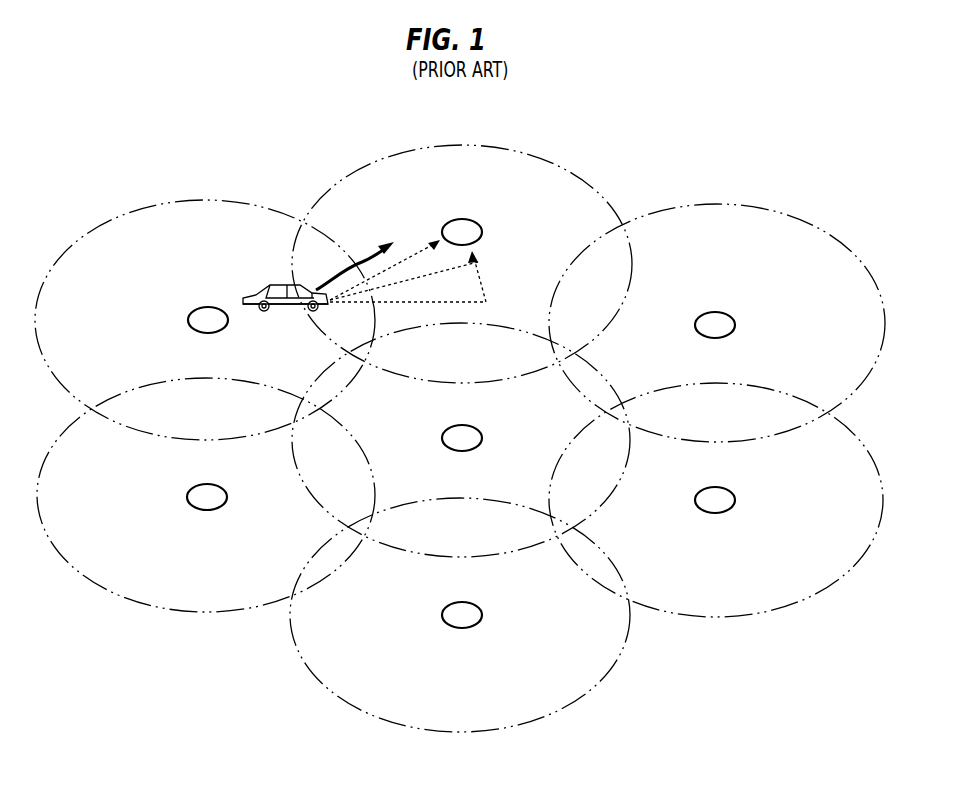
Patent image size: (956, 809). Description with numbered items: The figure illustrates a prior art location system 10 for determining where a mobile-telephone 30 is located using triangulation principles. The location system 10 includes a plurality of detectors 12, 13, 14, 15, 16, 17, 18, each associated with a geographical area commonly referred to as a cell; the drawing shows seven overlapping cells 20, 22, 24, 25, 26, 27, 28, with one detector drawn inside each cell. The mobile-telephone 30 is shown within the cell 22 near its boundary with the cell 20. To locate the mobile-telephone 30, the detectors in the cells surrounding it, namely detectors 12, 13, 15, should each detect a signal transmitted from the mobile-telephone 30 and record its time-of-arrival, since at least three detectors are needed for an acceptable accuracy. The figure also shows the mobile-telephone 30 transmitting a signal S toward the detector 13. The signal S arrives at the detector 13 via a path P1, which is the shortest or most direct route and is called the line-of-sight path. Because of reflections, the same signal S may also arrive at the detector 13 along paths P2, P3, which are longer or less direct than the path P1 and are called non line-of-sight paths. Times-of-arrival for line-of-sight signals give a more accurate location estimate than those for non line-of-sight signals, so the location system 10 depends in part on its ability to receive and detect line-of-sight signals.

The location system 10 is at (670, 116).
The detector 12 is at (188, 320).
The detector 13 is at (483, 235).
The detector 14 is at (735, 328).
The detector 15 is at (442, 439).
The detector 16 is at (187, 497).
The detector 17 is at (442, 616).
The detector 18 is at (735, 503).
The cell 20 is at (522, 152).
The cell 22 is at (171, 201).
The cell 24 is at (811, 226).
The cell 25 is at (611, 364).
The cell 26 is at (175, 612).
The cell 27 is at (535, 722).
The cell 28 is at (801, 600).
The mobile-telephone 30 is at (270, 290).
The signal S is at (330, 278).
The line-of-sight path P1 is at (413, 249).
The non line-of-sight path P2 is at (433, 276).
The non line-of-sight path P3 is at (478, 282).